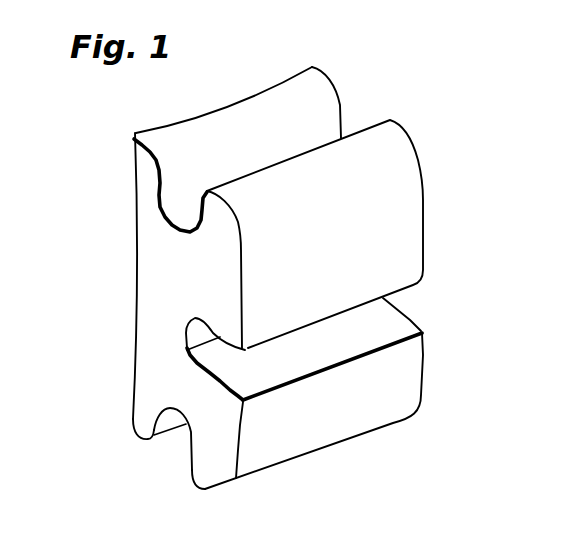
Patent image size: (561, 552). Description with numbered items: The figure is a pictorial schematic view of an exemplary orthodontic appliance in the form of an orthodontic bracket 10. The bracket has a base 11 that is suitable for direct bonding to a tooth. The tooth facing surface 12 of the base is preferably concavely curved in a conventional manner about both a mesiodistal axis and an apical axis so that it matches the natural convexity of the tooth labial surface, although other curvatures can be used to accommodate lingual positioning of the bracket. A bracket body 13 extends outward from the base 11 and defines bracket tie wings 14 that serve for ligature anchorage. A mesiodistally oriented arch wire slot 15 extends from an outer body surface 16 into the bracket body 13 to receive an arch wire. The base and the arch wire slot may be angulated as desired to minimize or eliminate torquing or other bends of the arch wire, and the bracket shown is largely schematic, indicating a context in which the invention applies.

The orthodontic bracket 10 is at (284, 302).
The base 11 is at (212, 253).
The tooth facing surface 12 is at (157, 132).
The bracket body 13 is at (216, 421).
The bracket tie wings 14 is at (218, 220).
The arch wire slot 15 is at (403, 326).
The outer body surface 16 is at (317, 408).